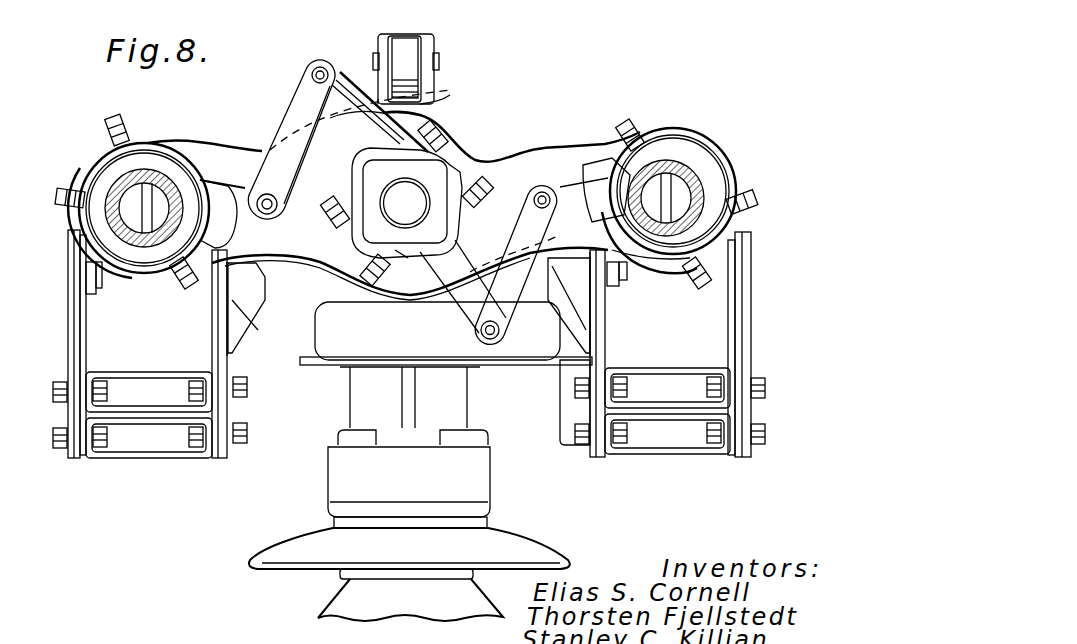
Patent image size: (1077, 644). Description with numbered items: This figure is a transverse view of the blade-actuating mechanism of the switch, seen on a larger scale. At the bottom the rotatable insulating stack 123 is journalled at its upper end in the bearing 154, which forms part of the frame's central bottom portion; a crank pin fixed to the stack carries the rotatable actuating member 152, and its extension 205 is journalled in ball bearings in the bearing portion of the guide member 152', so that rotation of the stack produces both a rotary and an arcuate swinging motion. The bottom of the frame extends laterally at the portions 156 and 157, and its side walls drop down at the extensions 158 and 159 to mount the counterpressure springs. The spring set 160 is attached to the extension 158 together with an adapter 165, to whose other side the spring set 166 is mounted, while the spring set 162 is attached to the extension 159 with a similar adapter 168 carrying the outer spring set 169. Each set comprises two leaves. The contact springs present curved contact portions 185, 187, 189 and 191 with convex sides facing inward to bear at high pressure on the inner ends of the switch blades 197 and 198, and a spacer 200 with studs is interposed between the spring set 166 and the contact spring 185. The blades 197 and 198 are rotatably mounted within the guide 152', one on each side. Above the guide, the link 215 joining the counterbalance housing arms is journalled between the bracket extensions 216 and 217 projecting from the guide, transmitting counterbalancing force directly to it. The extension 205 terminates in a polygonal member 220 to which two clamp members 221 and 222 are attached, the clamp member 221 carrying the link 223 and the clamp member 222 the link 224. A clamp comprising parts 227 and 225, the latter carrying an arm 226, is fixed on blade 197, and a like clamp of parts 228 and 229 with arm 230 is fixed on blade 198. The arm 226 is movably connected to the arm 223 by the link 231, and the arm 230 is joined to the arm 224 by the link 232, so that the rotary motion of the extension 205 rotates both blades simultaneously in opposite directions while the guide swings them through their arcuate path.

The rotatable insulating stack 123 is at (240, 562).
The actuating member 152 is at (410, 301).
The guide member 152' is at (394, 130).
The bearing 154 is at (322, 320).
The lateral extension of frame bottom 156 is at (530, 345).
The lateral extension of frame bottom 157 is at (290, 345).
The frame extension 158 is at (580, 408).
The frame extension 159 is at (318, 370).
The counterpressure spring set 160 is at (592, 342).
The counterpressure spring set 162 is at (226, 337).
The adapter 165 is at (663, 440).
The counterpressure spring set 166 is at (735, 322).
The adapter 168 is at (130, 447).
The counterpressure spring set 169 is at (80, 344).
The contact portion of contact spring 185 is at (718, 282).
The contact portion of contact spring 187 is at (610, 286).
The contact portion of contact spring 189 is at (196, 288).
The contact portion of contact spring 191 is at (96, 290).
The switch blade 197 is at (692, 172).
The switch blade 198 is at (112, 212).
The spacer 200 is at (724, 250).
The extension 205 is at (392, 208).
The link 215 is at (404, 40).
The bracket extension 216 is at (433, 45).
The bracket extension 217 is at (378, 45).
The polygonal member 220 is at (437, 218).
The clamp member 221 is at (395, 255).
The clamp member 222 is at (360, 186).
The link 223 is at (455, 305).
The link 224 is at (428, 106).
The clamp part 225 is at (676, 252).
The arm 226 is at (575, 182).
The clamp part 227 is at (665, 140).
The clamp part 228 is at (68, 186).
The clamp part 229 is at (152, 152).
The arm 230 is at (226, 190).
The link 231 is at (514, 225).
The link 232 is at (290, 110).